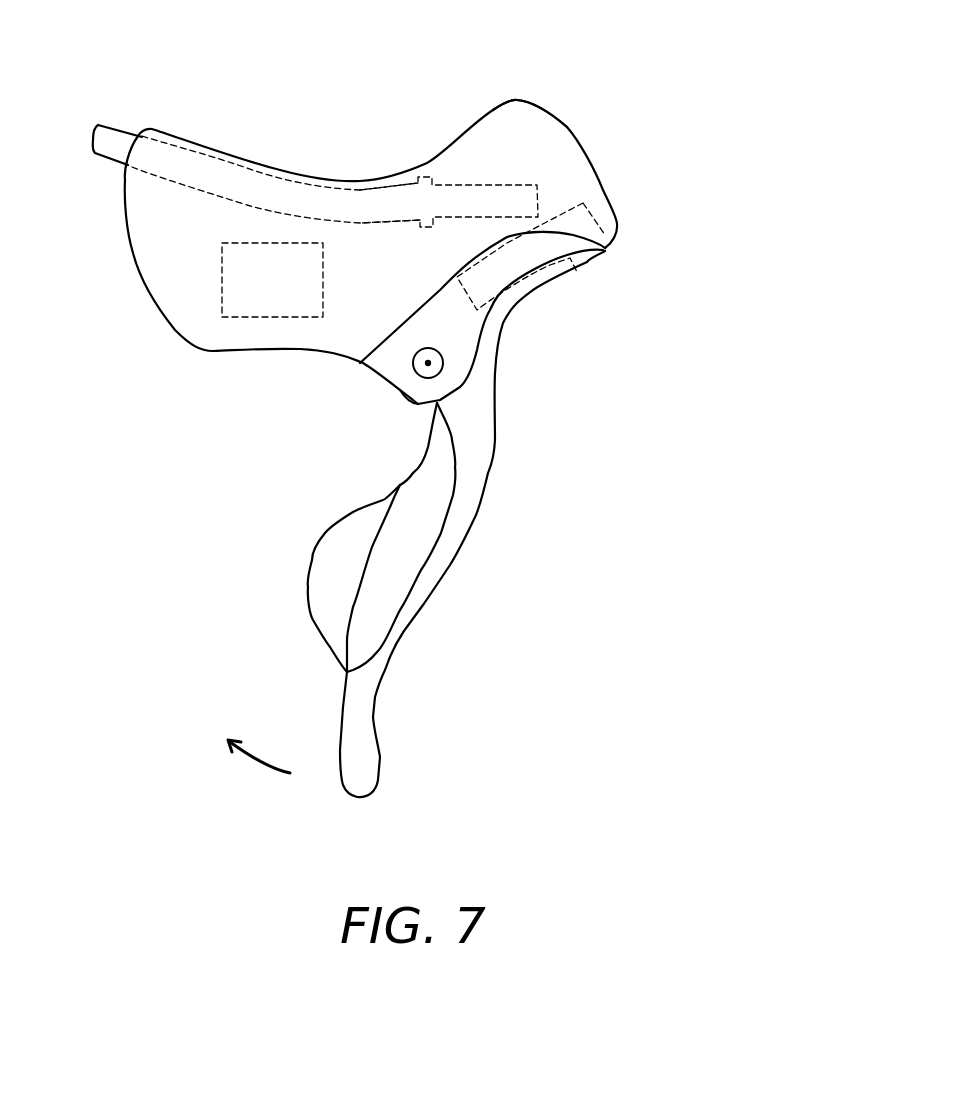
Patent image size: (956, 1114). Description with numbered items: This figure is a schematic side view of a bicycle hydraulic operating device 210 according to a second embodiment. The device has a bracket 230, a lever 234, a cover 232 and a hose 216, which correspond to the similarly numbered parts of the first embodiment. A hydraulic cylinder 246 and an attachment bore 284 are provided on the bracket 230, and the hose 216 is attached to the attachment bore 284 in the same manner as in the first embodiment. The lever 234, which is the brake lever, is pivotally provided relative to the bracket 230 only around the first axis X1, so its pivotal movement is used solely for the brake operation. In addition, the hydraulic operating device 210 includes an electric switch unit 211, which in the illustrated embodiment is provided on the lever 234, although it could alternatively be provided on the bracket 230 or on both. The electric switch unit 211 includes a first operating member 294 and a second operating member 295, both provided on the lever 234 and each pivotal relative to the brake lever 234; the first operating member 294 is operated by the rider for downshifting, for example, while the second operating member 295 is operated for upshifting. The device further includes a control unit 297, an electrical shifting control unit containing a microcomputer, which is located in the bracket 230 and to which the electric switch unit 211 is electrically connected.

The bicycle hydraulic operating device 210 is at (567, 65).
The electric switch unit 211 is at (303, 653).
The hose 216 is at (196, 160).
The bracket 230 is at (463, 320).
The cover 232 is at (567, 123).
The lever 234 is at (458, 537).
The hydraulic cylinder 246 is at (577, 272).
The attachment bore 284 is at (527, 197).
The first operating member 294 is at (383, 598).
The second operating member 295 is at (337, 563).
The control unit 297 is at (257, 317).
The first axis X1 is at (428, 363).